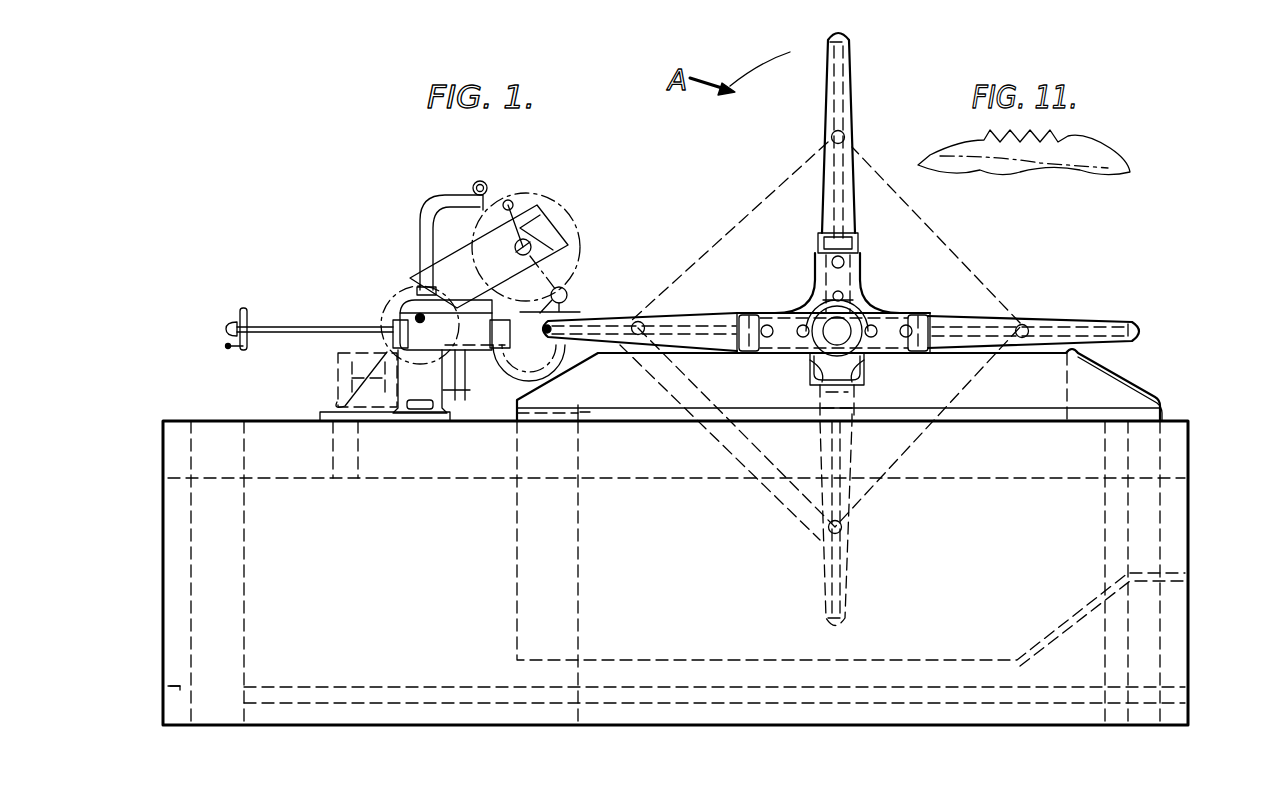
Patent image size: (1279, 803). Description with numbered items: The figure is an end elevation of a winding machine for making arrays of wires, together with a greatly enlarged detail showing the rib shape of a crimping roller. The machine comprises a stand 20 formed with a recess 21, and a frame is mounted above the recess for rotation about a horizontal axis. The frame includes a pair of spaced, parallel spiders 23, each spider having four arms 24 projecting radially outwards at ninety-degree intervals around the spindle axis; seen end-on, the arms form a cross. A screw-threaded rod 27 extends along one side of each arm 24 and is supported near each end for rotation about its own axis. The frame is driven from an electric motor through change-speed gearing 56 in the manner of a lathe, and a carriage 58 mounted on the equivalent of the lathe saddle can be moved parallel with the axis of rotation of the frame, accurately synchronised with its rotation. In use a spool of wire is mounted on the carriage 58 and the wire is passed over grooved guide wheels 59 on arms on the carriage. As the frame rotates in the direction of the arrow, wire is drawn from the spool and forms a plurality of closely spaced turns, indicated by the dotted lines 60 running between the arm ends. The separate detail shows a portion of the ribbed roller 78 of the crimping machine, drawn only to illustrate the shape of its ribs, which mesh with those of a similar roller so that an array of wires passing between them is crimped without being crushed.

In FIG. 1, the stand 20 is at (1190, 621).
In FIG. 1, the recess 21 is at (936, 628).
In FIG. 1, the spider 23 is at (880, 305).
In FIG. 1, the arm 24 is at (856, 112).
In FIG. 1, the screw-threaded rod 27 is at (850, 222).
In FIG. 1, the change-speed gearing 56 is at (450, 252).
In FIG. 1, the carriage 58 is at (415, 370).
In FIG. 1, the grooved guide wheel 59 is at (485, 181).
In FIG. 1, the dotted lines indicating turns of wire 60 is at (714, 246).
In FIG. 11, the ribbed roller 78 is at (1092, 162).